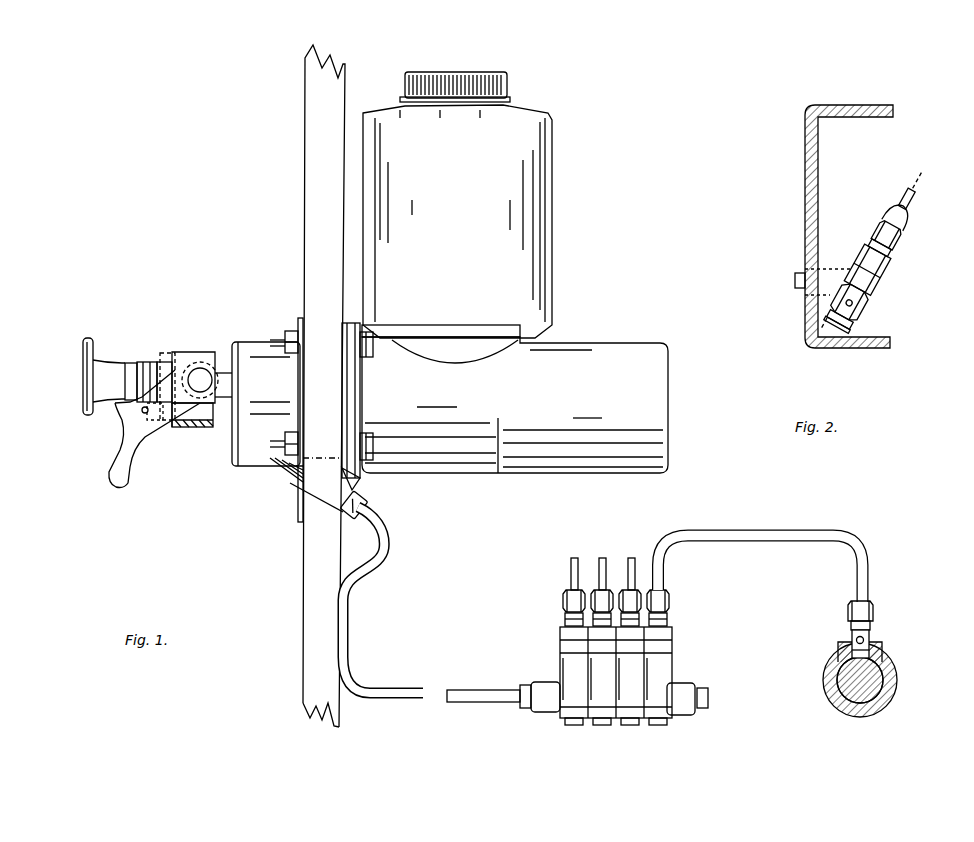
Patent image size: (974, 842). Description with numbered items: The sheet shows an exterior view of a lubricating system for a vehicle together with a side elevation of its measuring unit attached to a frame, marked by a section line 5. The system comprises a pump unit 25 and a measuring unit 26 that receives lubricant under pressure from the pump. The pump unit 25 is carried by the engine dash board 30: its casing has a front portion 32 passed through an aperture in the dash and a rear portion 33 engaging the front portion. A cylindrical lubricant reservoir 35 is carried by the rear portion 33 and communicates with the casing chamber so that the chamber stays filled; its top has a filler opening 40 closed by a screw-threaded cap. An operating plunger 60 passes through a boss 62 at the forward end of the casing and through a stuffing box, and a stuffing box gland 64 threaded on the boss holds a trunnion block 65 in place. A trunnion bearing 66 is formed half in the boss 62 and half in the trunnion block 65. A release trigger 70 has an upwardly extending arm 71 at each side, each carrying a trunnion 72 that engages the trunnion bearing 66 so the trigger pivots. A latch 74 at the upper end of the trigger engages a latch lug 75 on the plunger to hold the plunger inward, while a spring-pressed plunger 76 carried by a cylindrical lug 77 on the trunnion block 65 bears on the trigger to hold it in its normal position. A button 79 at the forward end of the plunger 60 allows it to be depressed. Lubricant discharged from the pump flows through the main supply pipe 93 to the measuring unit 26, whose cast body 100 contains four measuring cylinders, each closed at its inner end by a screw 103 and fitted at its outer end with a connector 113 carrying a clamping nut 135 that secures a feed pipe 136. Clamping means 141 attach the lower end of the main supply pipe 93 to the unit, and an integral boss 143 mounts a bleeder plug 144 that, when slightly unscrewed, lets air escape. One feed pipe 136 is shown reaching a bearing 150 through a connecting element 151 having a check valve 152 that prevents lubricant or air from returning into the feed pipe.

In FIG. 2, the section line 5 is at (928, 260).
In FIG. 1, the pump unit 25 is at (236, 478).
In FIG. 1, the measuring unit 26 is at (558, 636).
In FIG. 2, the measuring unit 26 is at (867, 270).
In FIG. 1, the dash board 30 is at (305, 162).
In FIG. 1, the front portion 32 is at (278, 340).
In FIG. 1, the rear portion 33 is at (672, 334).
In FIG. 1, the lubricant reservoir 35 is at (552, 212).
In FIG. 1, the filler opening 40 is at (508, 84).
In FIG. 1, the operating plunger 60 is at (157, 365).
In FIG. 1, the boss 62 is at (210, 368).
In FIG. 1, the stuffing box gland 64 is at (150, 362).
In FIG. 1, the trunnion block 65 is at (170, 355).
In FIG. 1, the trunnion bearing 66 is at (202, 368).
In FIG. 1, the release trigger 70 is at (121, 435).
In FIG. 1, the arm 71 is at (176, 428).
In FIG. 1, the trunnion 72 is at (216, 382).
In FIG. 1, the latch 74 is at (128, 386).
In FIG. 1, the latch lug 75 is at (158, 370).
In FIG. 1, the spring-pressed plunger 76 is at (150, 414).
In FIG. 1, the cylindrical lug 77 is at (202, 428).
In FIG. 1, the button 79 is at (83, 360).
In FIG. 1, the main supply pipe 93 is at (384, 522).
In FIG. 1, the body 100 is at (572, 665).
In FIG. 2, the body 100 is at (867, 269).
In FIG. 1, the screw 103 is at (640, 726).
In FIG. 1, the connector 113 is at (565, 618).
In FIG. 2, the connector 113 is at (879, 248).
In FIG. 1, the clamping nut 135 is at (563, 597).
In FIG. 2, the clamping nut 135 is at (887, 234).
In FIG. 1, the feed pipe 136 is at (630, 558).
In FIG. 2, the feed pipe 136 is at (902, 207).
In FIG. 1, the clamping means 141 is at (530, 684).
In FIG. 1, the boss 143 is at (688, 712).
In FIG. 1, the bleeder plug 144 is at (708, 692).
In FIG. 2, the bleeder plug 144 is at (847, 307).
In FIG. 1, the bearing 150 is at (890, 668).
In FIG. 1, the connecting element 151 is at (876, 615).
In FIG. 1, the check valve 152 is at (870, 641).